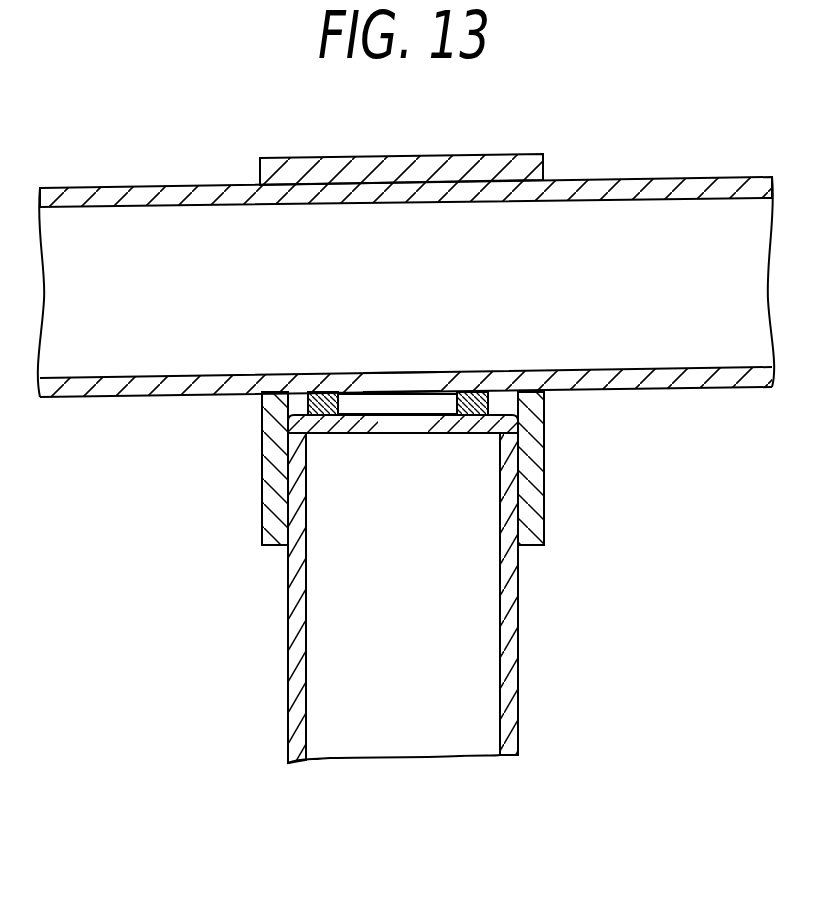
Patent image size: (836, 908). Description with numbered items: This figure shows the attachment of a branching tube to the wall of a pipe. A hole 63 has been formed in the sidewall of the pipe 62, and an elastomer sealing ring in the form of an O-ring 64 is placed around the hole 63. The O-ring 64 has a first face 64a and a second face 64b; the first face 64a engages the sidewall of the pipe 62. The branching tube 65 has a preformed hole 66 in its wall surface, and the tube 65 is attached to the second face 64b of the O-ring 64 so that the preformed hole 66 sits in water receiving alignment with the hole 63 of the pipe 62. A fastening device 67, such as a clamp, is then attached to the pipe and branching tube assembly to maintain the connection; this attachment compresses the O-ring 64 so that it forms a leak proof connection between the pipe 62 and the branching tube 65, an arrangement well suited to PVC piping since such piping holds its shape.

The pipe 62 is at (330, 196).
The hole 63 is at (405, 372).
The O-ring 64 is at (488, 404).
The first face 64a is at (318, 393).
The second face 64b is at (285, 458).
The branching tube 65 is at (510, 588).
The preformed hole 66 is at (405, 423).
The fastening device 67 is at (523, 160).